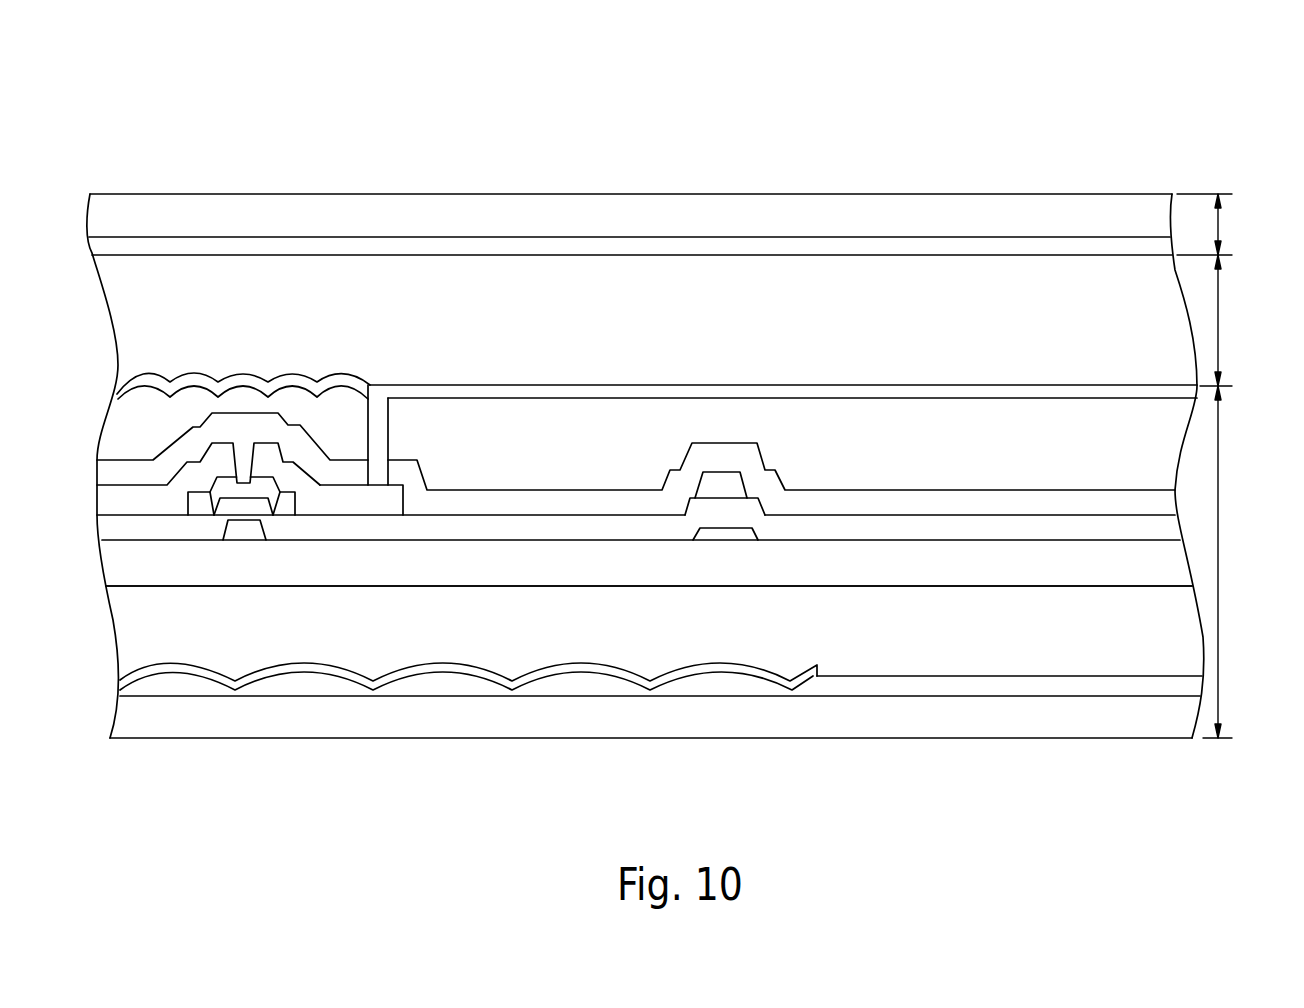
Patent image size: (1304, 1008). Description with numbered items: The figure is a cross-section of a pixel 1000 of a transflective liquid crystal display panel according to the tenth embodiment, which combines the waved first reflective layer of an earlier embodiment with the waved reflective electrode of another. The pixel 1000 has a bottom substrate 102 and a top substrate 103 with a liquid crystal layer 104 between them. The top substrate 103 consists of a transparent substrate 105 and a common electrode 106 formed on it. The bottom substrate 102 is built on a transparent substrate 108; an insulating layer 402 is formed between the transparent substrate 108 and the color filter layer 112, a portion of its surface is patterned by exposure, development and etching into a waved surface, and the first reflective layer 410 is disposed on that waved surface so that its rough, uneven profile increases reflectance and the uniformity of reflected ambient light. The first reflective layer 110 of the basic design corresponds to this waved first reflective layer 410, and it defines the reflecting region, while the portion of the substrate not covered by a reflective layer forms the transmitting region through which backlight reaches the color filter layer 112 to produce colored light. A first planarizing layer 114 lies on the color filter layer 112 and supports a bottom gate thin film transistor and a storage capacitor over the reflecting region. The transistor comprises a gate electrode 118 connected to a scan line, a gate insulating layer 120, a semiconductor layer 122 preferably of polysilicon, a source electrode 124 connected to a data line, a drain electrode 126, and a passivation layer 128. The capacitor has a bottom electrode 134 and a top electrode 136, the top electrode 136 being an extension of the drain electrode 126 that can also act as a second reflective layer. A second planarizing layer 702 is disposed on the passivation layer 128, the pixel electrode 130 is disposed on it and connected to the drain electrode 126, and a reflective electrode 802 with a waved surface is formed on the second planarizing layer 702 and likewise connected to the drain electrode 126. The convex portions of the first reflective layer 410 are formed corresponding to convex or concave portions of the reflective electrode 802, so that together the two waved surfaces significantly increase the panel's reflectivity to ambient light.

The pixel 1000 is at (1148, 128).
The bottom substrate 102 is at (1234, 562).
The top substrate 103 is at (1221, 224).
The liquid crystal layer 104 is at (1233, 320).
The transparent substrate 105 is at (522, 212).
The common electrode 106 is at (583, 248).
The transparent substrate 108 is at (572, 718).
The first reflective layer 110 is at (757, 690).
The color filter layer 112 is at (987, 650).
The first planarizing layer 114 is at (1070, 565).
The gate electrode 118 is at (247, 533).
The gate insulating layer 120 is at (505, 528).
The semiconductor layer 122 is at (200, 507).
The source electrode 124 is at (140, 503).
The drain electrode 126 is at (347, 498).
The passivation layer 128 is at (440, 502).
The pixel electrode 130 is at (493, 390).
The bottom electrode 134 is at (713, 535).
The top electrode 136 is at (718, 482).
The insulating layer 402 is at (900, 680).
The first reflective layer 410 is at (628, 692).
The second planarizing layer 702 is at (184, 417).
The reflective electrode 802 is at (240, 380).